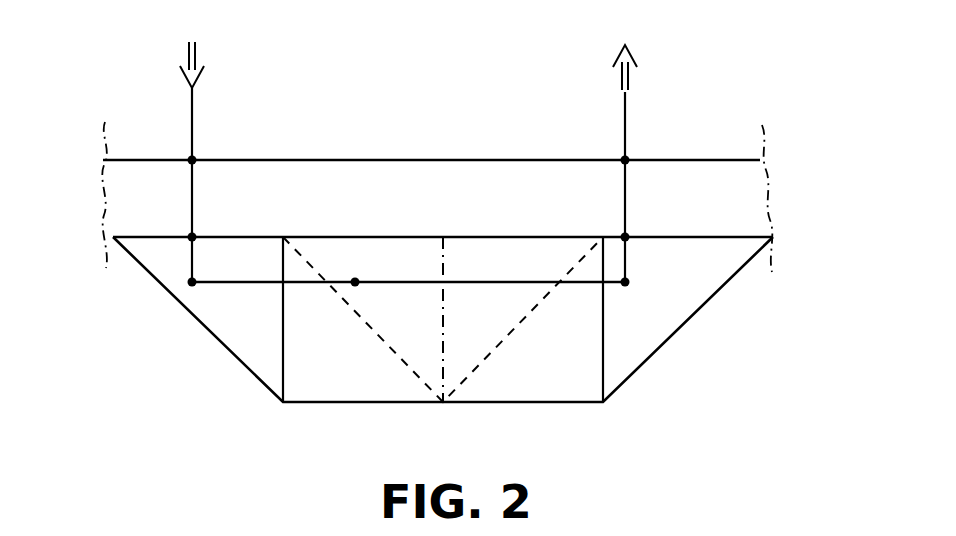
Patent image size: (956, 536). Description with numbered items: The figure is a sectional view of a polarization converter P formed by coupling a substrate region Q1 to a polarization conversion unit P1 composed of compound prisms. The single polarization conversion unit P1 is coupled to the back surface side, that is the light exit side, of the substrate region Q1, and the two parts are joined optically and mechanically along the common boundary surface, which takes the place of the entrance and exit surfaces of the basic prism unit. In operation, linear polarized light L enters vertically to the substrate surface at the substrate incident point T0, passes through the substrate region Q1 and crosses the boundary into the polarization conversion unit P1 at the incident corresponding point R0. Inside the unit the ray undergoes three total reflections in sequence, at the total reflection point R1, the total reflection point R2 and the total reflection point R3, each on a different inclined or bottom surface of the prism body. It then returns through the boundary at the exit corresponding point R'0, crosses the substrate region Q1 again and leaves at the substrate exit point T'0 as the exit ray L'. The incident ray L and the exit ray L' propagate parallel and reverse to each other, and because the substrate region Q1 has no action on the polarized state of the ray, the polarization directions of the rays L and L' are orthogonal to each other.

The polarization converter P is at (430, 122).
The polarization conversion unit P1 is at (543, 418).
The substrate region Q1 is at (742, 198).
The linear polarized light L is at (192, 141).
The exit ray L' is at (625, 144).
The substrate incident point T0 is at (192, 160).
The substrate exit point T'0 is at (685, 116).
The incident corresponding point R0 is at (192, 238).
The exit corresponding point R'0 is at (711, 277).
The total reflection point R1 is at (192, 283).
The total reflection point R2 is at (355, 284).
The total reflection point R3 is at (626, 283).